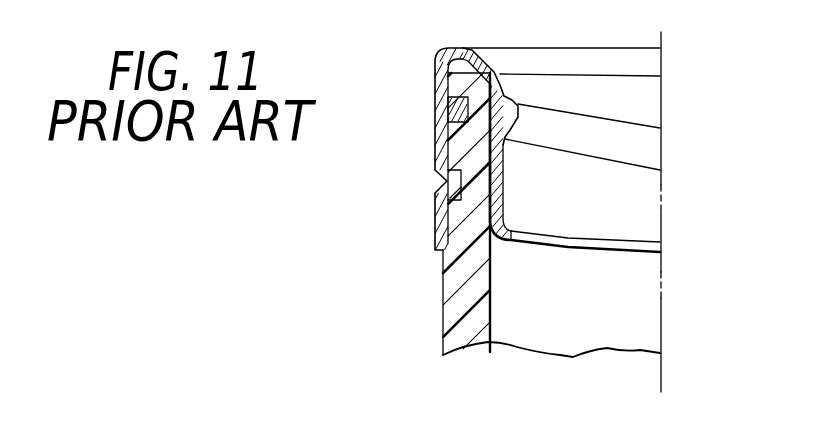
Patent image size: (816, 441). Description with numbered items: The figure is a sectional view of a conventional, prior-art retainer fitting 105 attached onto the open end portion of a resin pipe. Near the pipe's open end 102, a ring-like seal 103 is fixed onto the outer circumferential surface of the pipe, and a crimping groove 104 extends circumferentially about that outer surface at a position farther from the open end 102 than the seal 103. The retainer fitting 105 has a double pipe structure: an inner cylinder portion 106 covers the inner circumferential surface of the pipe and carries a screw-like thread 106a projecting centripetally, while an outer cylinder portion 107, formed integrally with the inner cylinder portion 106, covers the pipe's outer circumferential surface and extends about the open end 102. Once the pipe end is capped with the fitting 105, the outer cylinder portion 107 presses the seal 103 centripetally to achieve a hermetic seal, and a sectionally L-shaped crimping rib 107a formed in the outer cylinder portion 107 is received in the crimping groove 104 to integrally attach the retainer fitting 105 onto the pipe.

The open end 102 is at (462, 48).
The ring-like seal 103 is at (447, 107).
The crimping groove 104 is at (457, 200).
The retainer fitting 105 is at (553, 44).
The inner cylinder portion 106 is at (627, 252).
The screw-like thread 106a is at (632, 133).
The outer cylinder portion 107 is at (451, 138).
The crimping rib 107a is at (447, 195).